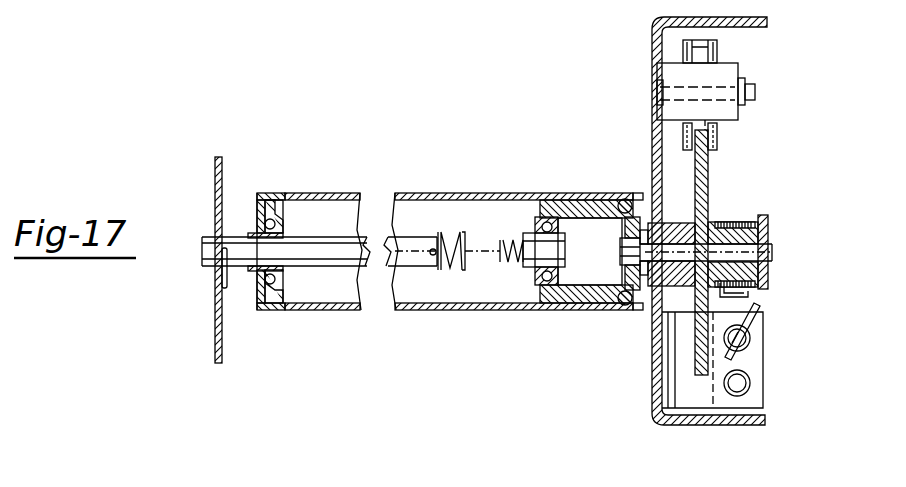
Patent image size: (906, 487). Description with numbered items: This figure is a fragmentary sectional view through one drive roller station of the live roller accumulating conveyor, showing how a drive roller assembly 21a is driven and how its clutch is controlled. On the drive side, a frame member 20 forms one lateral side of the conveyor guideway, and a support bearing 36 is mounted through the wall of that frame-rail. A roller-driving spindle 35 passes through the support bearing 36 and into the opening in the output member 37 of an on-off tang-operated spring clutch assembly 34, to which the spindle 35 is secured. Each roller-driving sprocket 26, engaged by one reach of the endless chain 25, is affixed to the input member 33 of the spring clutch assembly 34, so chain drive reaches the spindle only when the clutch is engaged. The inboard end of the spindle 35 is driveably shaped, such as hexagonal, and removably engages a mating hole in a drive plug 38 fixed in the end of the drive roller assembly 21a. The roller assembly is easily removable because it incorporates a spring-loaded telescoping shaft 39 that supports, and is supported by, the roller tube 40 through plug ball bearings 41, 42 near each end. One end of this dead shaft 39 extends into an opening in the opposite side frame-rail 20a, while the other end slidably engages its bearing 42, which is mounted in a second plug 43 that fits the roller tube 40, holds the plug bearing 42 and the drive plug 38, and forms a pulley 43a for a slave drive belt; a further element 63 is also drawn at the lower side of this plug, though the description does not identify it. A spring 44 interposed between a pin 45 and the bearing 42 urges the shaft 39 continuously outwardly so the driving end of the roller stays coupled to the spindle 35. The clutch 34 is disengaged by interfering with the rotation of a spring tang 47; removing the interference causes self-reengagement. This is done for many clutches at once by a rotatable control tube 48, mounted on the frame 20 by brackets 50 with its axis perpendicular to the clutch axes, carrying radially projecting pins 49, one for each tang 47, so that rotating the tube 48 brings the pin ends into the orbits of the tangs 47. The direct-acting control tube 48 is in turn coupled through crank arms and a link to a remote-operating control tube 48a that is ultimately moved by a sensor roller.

The frame member 20 is at (652, 80).
The opposite side frame-rail 20a is at (215, 172).
The drive roller assembly 21a is at (326, 193).
The endless chain 25 is at (717, 52).
The roller-driving sprocket 26 is at (700, 360).
The input member 33 is at (710, 222).
The spring clutch assembly 34 is at (740, 224).
The roller-driving spindle 35 is at (618, 255).
The support bearing 36 is at (651, 292).
The output member 37 is at (765, 240).
The drive plug 38 is at (614, 236).
The spring-loaded telescoping shaft 39 is at (425, 238).
The roller tube 40 is at (478, 195).
The plug ball bearing 41 is at (283, 194).
The plug ball bearing 42 is at (540, 280).
The second plug 43 is at (575, 200).
The pulley 43a is at (620, 212).
The spring 44 is at (455, 268).
The pin 45 is at (430, 255).
The spring tang 47 is at (748, 294).
The rotatable control tube 48 is at (750, 345).
The remote-operating control tube 48a is at (740, 394).
The radially projecting pin 49 is at (760, 326).
The bracket 50 is at (755, 398).
The set screw 63 is at (620, 305).